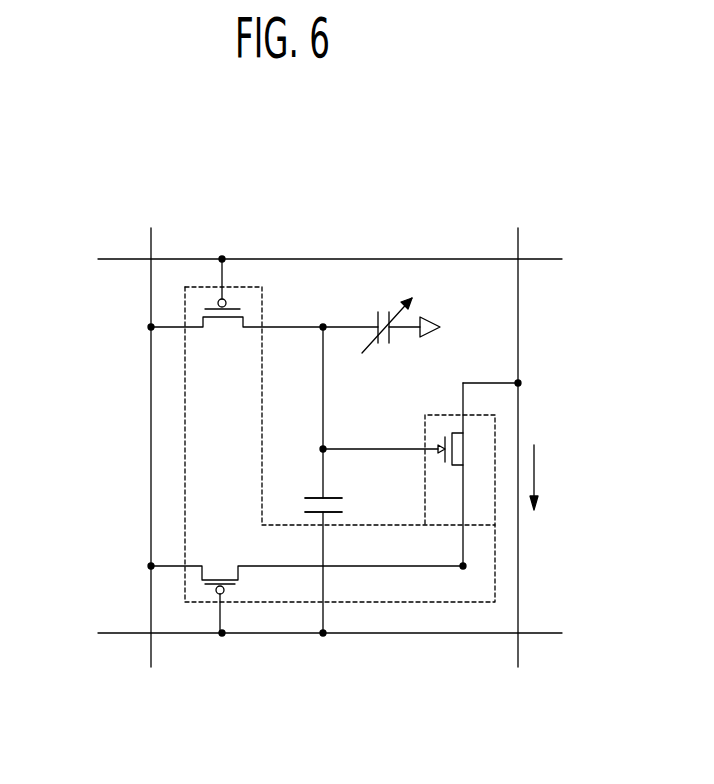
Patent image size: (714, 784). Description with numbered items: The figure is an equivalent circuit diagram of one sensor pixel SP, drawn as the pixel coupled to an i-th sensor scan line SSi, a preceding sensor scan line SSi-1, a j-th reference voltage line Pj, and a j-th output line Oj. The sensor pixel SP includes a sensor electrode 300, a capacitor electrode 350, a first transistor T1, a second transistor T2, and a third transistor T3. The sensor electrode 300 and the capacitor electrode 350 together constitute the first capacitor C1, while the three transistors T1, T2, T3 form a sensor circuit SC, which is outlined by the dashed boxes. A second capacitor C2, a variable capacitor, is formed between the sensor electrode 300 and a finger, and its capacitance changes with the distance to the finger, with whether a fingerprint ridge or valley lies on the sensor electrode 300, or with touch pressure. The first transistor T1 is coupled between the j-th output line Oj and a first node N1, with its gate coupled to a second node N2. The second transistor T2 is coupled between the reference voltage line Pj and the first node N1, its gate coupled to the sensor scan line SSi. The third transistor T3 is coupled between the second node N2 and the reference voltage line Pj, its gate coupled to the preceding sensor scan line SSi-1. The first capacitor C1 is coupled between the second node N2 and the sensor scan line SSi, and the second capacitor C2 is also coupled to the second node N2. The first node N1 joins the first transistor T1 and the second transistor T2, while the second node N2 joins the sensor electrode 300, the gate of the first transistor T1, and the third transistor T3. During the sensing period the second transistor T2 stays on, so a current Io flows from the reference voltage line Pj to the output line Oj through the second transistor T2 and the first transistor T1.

The sensor pixel SP is at (547, 142).
The sensor circuit SC is at (492, 565).
The j-th reference voltage line Pj is at (150, 430).
The j-th output line Oj is at (519, 430).
The i−1-th sensor scan line SSi-1 is at (303, 260).
The i-th sensor scan line SSi is at (311, 634).
The first transistor T1 is at (420, 474).
The second transistor T2 is at (307, 589).
The third transistor T3 is at (264, 307).
The first capacitor C1 is at (337, 509).
The second capacitor C2 is at (401, 337).
The first node N1 is at (467, 581).
The second node N2 is at (337, 464).
The sensor electrode 300 is at (308, 497).
The capacitor electrode 350 is at (310, 514).
The current Io is at (544, 477).